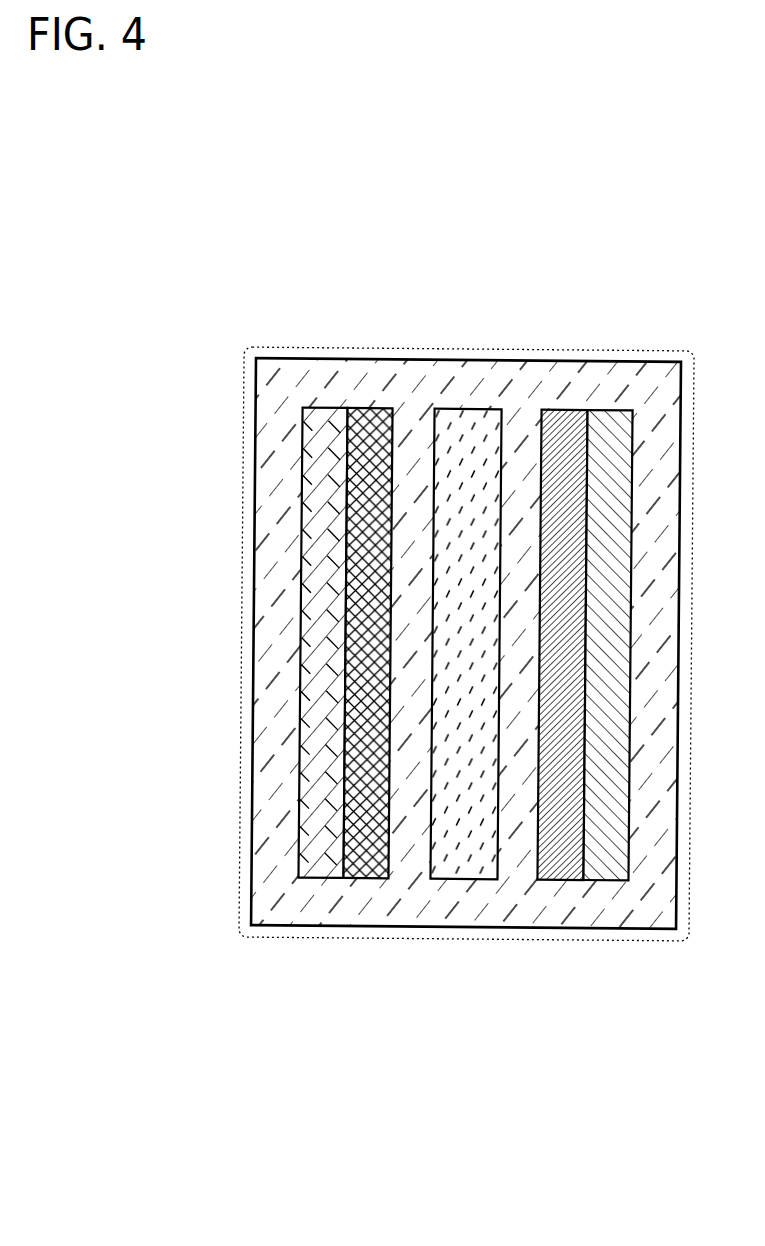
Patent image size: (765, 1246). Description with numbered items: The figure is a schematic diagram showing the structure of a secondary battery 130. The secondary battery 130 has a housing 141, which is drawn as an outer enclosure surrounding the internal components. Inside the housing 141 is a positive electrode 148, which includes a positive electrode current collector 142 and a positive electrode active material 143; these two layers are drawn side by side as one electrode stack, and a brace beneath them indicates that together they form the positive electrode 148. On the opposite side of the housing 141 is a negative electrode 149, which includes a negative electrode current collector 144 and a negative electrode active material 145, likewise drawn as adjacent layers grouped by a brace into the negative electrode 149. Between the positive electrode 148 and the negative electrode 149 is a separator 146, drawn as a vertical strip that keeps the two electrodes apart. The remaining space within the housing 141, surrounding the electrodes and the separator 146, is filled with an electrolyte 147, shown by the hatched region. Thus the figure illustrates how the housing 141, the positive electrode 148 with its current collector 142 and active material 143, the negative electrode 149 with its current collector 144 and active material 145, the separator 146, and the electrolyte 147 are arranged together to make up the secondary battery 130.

The secondary battery 130 is at (372, 349).
The housing 141 is at (645, 362).
The positive electrode current collector 142 is at (320, 858).
The positive electrode active material 143 is at (363, 860).
The negative electrode current collector 144 is at (612, 858).
The negative electrode active material 145 is at (563, 858).
The separator 146 is at (463, 858).
The electrolyte 147 is at (285, 378).
The positive electrode 148 is at (345, 759).
The negative electrode 149 is at (591, 760).